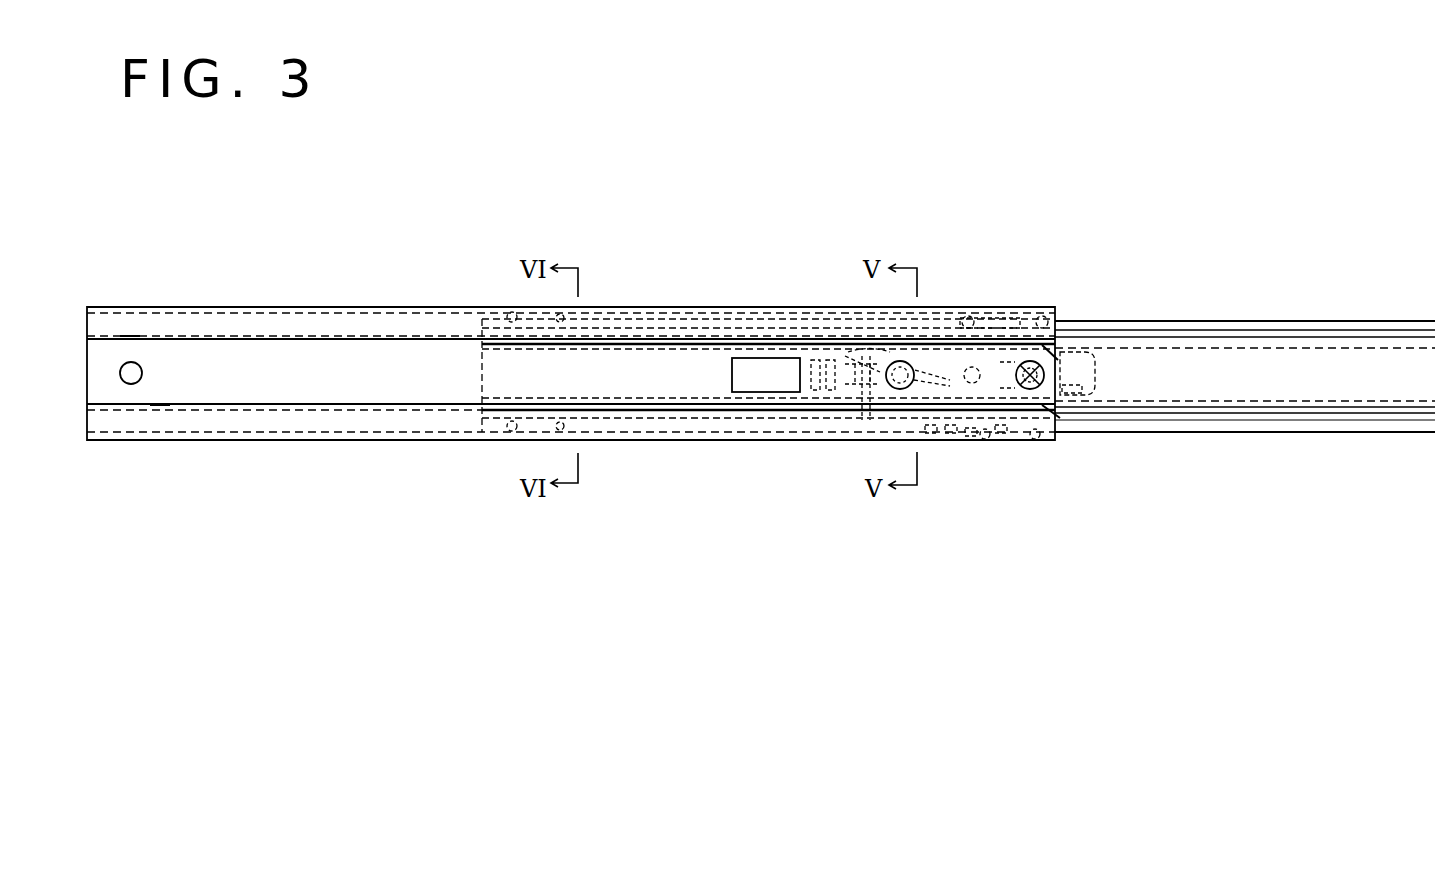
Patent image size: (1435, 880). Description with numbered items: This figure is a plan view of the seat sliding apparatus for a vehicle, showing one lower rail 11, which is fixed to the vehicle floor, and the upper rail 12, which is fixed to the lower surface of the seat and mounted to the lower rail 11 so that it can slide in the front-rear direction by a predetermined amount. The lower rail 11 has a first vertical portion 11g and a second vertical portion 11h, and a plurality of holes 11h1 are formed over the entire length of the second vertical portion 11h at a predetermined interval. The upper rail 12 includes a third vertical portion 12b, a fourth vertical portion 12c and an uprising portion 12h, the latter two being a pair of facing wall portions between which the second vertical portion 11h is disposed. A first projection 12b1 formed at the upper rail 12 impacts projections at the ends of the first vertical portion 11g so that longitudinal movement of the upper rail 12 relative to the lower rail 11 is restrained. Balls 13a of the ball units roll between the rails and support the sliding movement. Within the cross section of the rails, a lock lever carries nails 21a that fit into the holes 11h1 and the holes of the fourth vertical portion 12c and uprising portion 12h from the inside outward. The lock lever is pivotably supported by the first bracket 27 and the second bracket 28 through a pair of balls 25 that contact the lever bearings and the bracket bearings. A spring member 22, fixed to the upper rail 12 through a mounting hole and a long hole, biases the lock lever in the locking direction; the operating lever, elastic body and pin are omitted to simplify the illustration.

The lower rail 11 is at (355, 306).
The first vertical portion 11g is at (200, 336).
The second vertical portion 11h is at (122, 410).
The hole 11h1 is at (160, 405).
The upper rail 12 is at (1267, 322).
The third vertical portion 12b is at (1346, 348).
The first projection 12b1 is at (968, 317).
The fourth vertical portion 12c is at (1355, 410).
The uprising portion 12h is at (1268, 420).
The ball 13a is at (512, 312).
The nail 21a is at (970, 440).
The spring member 22 is at (922, 372).
The ball 25 is at (867, 418).
The first bracket 27 is at (1095, 362).
The second bracket 28 is at (855, 354).